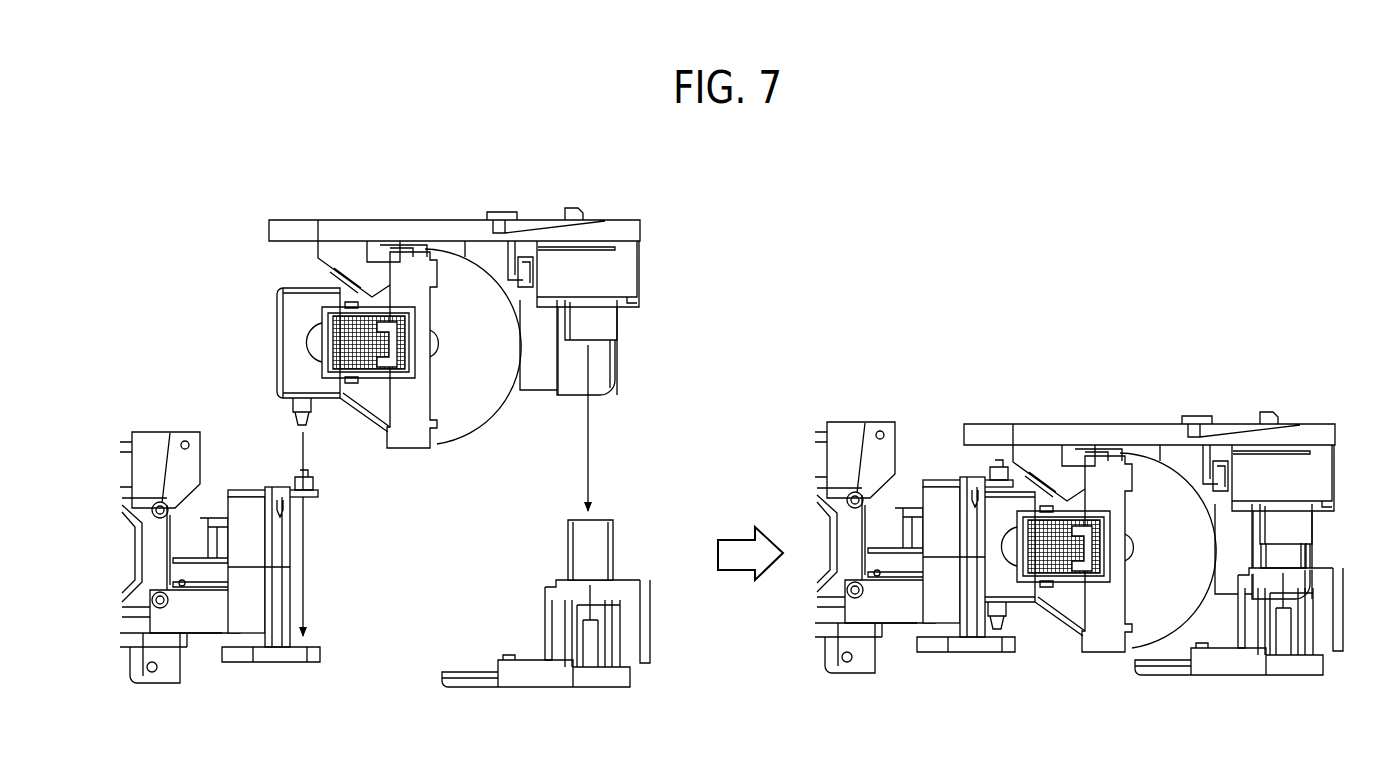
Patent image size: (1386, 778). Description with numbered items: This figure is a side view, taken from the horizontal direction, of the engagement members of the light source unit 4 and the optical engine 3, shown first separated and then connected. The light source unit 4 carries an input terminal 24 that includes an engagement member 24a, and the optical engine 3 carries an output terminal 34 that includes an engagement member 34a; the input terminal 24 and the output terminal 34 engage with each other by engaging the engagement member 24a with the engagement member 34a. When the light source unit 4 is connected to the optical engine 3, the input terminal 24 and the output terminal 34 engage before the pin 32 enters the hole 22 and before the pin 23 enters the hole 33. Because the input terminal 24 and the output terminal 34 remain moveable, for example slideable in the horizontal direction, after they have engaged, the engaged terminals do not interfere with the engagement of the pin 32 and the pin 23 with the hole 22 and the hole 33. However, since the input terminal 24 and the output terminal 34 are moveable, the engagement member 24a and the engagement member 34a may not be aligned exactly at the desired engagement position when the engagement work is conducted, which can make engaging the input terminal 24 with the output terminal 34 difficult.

The optical engine 3 is at (545, 575).
The light source unit 4 is at (410, 196).
The hole 22 is at (289, 251).
The pin 23 is at (290, 408).
The input terminal 24 is at (960, 420).
The engagement member 24a is at (601, 328).
The pin 32 is at (323, 484).
The hole 33 is at (310, 667).
The output terminal 34 is at (913, 601).
The engagement member 34a is at (598, 540).